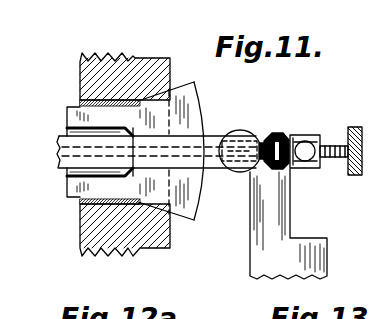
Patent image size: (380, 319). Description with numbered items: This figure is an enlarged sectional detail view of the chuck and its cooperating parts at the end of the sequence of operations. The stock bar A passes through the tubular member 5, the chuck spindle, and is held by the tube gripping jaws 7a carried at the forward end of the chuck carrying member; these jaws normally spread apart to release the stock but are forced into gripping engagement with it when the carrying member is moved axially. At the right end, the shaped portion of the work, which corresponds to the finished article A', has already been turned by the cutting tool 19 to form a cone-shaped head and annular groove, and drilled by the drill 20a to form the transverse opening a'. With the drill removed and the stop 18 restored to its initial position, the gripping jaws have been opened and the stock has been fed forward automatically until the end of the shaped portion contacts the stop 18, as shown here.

The tubular member 5 is at (101, 62).
The stock bar A is at (145, 173).
The tube gripping jaws 7a is at (187, 219).
The drill 20a is at (250, 172).
The cutting tool 19 is at (263, 237).
The transverse opening a' is at (305, 170).
The article A' is at (303, 137).
The stop 18 is at (357, 172).